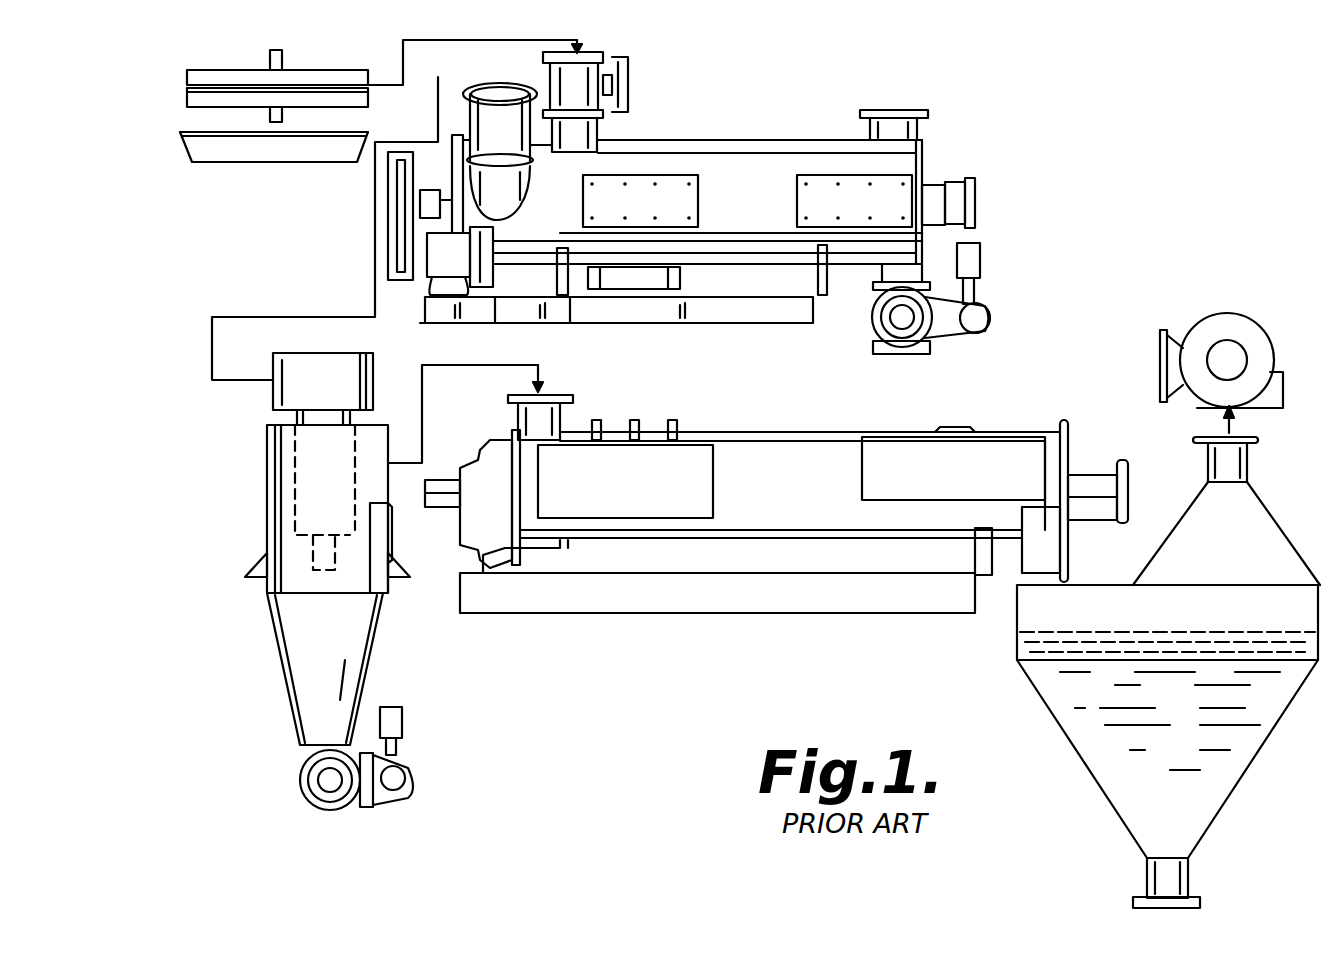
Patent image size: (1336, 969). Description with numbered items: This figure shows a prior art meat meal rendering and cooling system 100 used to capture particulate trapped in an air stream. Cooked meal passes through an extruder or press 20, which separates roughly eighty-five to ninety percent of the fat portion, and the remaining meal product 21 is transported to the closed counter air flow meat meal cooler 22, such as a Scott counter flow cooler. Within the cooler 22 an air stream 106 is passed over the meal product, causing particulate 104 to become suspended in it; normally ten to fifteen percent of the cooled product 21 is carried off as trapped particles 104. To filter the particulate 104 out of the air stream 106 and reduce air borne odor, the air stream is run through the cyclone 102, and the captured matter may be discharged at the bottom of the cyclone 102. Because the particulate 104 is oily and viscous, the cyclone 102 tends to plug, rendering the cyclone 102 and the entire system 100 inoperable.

The press 20 is at (187, 78).
The meal product 21 is at (500, 97).
The counter air flow meat meal cooler 22 is at (658, 143).
The meat meal rendering and cooling system 100 is at (767, 118).
The air stream 106 is at (893, 50).
The particulate 104 is at (268, 464).
The cyclone 102 is at (290, 512).